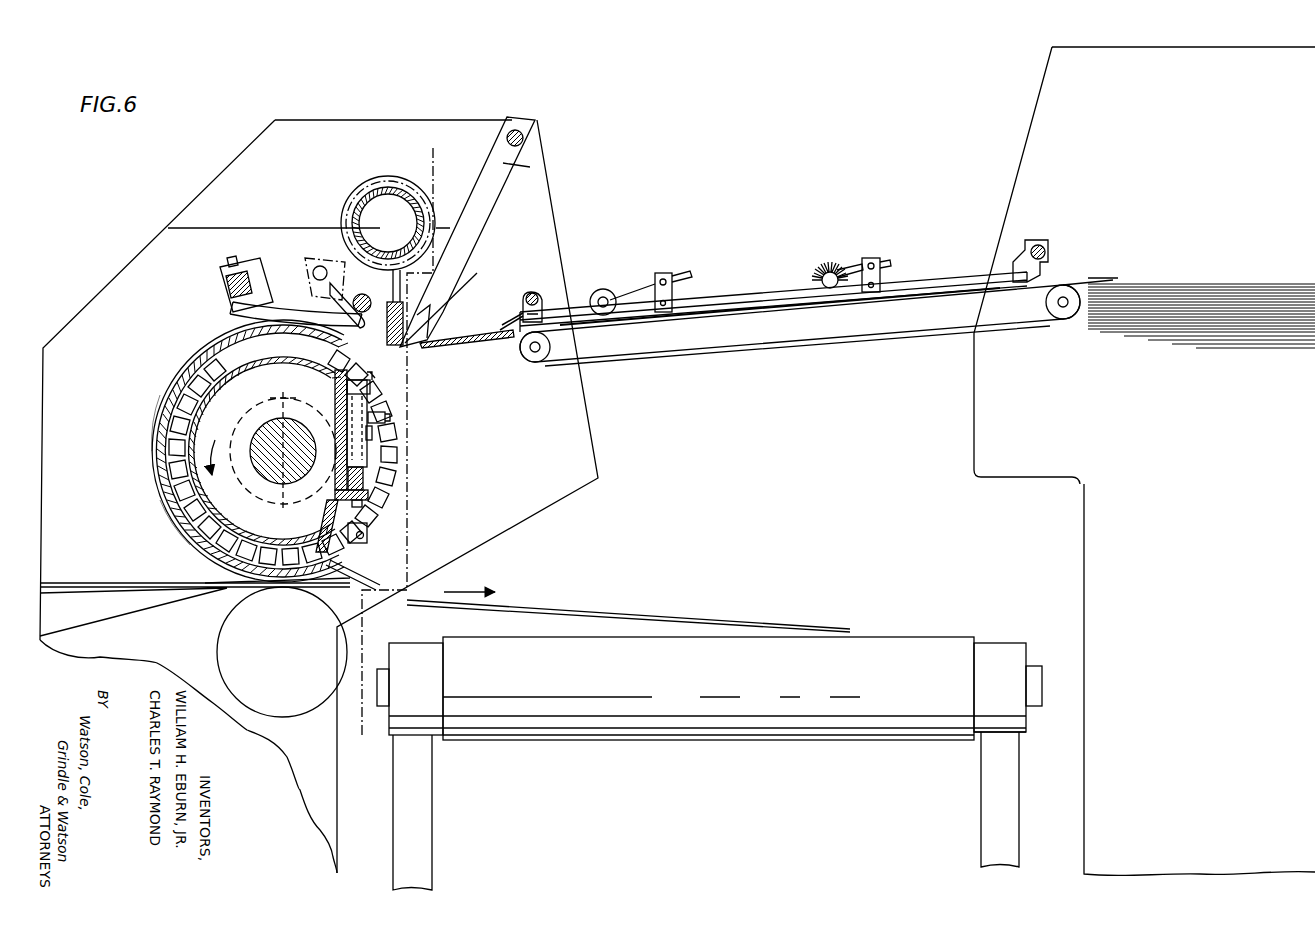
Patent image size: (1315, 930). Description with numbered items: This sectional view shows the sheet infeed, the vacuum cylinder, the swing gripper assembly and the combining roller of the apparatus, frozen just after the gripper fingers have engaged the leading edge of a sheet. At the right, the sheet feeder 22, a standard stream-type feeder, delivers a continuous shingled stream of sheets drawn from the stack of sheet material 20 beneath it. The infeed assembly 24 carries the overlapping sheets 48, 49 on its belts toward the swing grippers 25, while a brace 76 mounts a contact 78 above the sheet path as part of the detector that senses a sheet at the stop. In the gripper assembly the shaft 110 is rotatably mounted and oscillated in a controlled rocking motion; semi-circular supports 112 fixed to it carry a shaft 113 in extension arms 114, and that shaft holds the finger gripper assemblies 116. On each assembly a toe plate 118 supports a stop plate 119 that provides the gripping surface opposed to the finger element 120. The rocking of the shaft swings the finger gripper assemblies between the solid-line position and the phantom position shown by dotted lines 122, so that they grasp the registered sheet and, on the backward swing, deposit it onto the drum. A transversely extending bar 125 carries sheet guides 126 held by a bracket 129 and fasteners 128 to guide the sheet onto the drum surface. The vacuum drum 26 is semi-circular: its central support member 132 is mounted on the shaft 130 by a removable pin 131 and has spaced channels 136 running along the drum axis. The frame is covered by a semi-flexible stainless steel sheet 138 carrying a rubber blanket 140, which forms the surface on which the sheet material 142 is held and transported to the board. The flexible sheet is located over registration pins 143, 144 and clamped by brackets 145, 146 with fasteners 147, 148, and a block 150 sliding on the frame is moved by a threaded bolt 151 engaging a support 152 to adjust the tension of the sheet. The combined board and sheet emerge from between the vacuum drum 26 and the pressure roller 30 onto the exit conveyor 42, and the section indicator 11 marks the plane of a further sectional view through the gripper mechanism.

The section line 11- 11 is at (433, 148).
The rear panel 20 is at (1189, 566).
The sheet feeder 22 is at (1168, 192).
The infeed assembly 24 is at (738, 253).
The swing gripper assembly 25 is at (281, 170).
The vacuum drum 26 is at (256, 451).
The pressure roller 30 is at (277, 661).
The exit conveyor 42 is at (922, 637).
The sheet 48 is at (517, 342).
The sheet 49 is at (730, 316).
The brace 76 is at (494, 198).
The contact 78 is at (440, 311).
The shaft 110 is at (380, 224).
The semi-circular supports 112 is at (362, 195).
The shaft 113 is at (371, 300).
The extension arms 114 is at (388, 237).
The finger gripper assemblies 116 is at (372, 330).
The toe plate 118 is at (437, 291).
The stop plate 119 is at (436, 329).
The finger element 120 is at (406, 348).
The dotted lines 122 is at (318, 262).
The transversely extending bar 125 is at (226, 297).
The sheet guides 126 is at (283, 306).
The fasteners 128 is at (231, 257).
The bracket 129 is at (258, 268).
The shaft 130 is at (262, 430).
The removable pin 131 is at (265, 405).
The central support member 132 is at (330, 514).
The spaced channels 136 is at (260, 542).
The semi-flexible stainless steel sheet 138 is at (370, 386).
The rubber blanket 140 is at (186, 534).
The sheet material 142 is at (168, 500).
The registration pin 143 is at (384, 372).
The registration pin 144 is at (356, 546).
The bracket 145 is at (372, 430).
The bracket 146 is at (369, 527).
The fastener 147 is at (390, 415).
The fastener 148 is at (366, 538).
The block 150 is at (366, 448).
The threaded bolt 151 is at (372, 468).
The support 152 is at (370, 495).